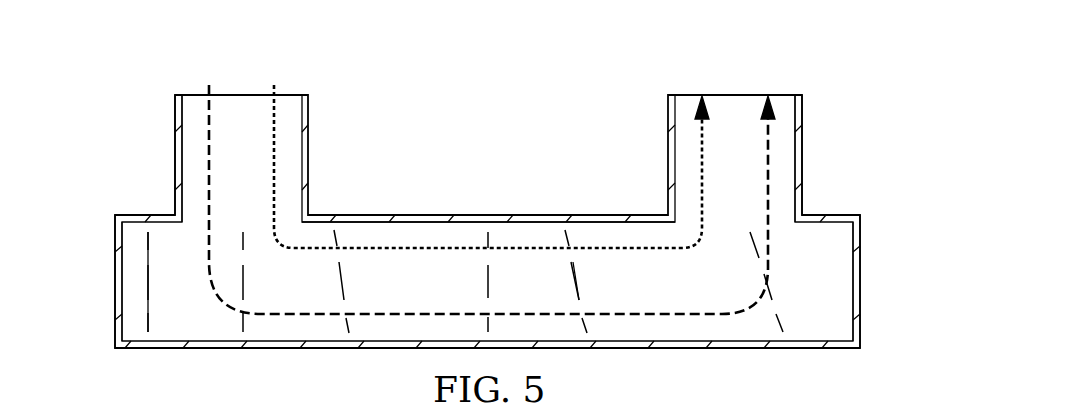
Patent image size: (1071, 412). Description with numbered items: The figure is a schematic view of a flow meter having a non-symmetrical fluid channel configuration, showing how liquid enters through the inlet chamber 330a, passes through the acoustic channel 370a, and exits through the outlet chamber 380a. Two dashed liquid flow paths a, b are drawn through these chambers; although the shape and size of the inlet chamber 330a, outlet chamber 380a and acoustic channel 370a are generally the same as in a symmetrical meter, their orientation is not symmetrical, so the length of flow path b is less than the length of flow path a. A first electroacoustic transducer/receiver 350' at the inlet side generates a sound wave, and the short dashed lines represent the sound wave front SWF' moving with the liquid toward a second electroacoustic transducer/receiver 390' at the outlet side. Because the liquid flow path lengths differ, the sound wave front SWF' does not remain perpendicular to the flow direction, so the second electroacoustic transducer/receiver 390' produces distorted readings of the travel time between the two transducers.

The inlet chamber 330a is at (189, 157).
The outlet chamber 380a is at (787, 157).
The acoustic channel 370a is at (422, 228).
The first electroacoustic transducer/receiver 350' is at (76, 281).
The second electroacoustic transducer/receiver 390' is at (900, 281).
The sound wave front SWF' is at (411, 282).
The liquid flow path a is at (489, 186).
The liquid flow path b is at (489, 153).